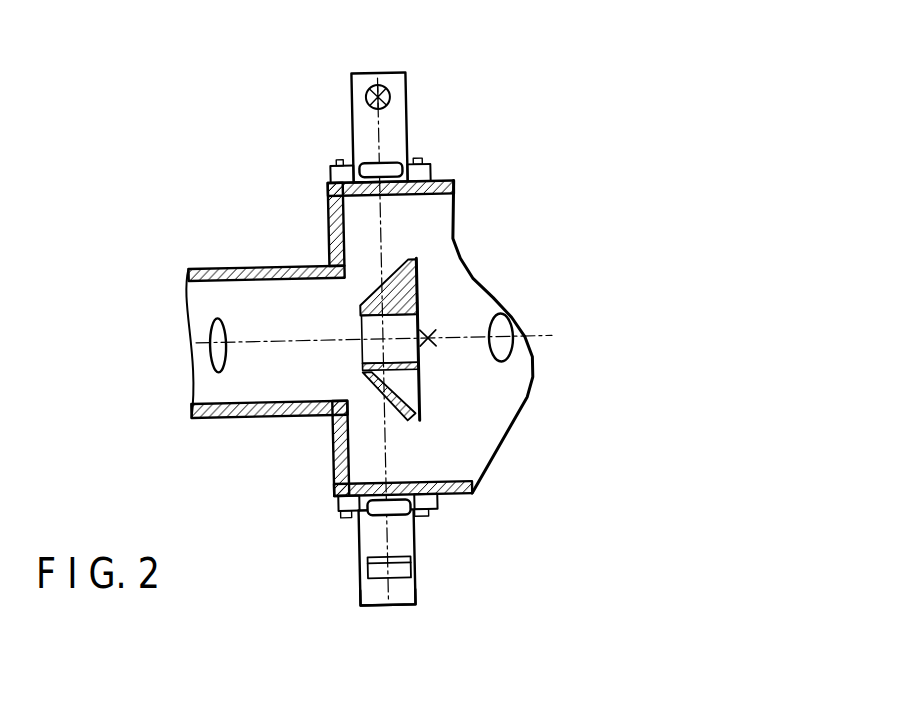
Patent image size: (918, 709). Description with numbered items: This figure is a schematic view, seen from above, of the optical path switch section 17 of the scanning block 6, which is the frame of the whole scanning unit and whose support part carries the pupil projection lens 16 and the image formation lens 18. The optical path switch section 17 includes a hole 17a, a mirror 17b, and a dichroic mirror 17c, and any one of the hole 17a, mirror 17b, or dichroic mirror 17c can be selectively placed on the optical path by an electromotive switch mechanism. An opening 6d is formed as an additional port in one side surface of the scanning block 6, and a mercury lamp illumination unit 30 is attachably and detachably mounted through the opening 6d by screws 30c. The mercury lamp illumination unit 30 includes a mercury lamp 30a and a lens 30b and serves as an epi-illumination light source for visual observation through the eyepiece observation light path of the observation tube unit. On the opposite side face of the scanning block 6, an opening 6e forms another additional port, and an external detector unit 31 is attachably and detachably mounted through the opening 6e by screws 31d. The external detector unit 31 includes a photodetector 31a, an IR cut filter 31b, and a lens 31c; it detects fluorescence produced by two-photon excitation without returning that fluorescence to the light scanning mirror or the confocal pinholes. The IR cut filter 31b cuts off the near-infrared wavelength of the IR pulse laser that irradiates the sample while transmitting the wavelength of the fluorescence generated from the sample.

The scanning block 6 is at (302, 409).
The opening 6d is at (400, 199).
The opening 6e is at (400, 484).
The pupil projection lens 16 is at (497, 350).
The optical path switch section 17 is at (421, 298).
The hole 17a is at (410, 328).
The mirror 17b is at (399, 258).
The dichroic mirror 17c is at (406, 421).
The image formation lens 18 is at (212, 353).
The mercury lamp illumination unit 30 is at (414, 110).
The mercury lamp 30a is at (388, 92).
The lens 30b is at (394, 163).
The screws 30c is at (338, 166).
The external detector unit 31 is at (355, 567).
The photodetector 31a is at (412, 582).
The IR cut filter 31b is at (412, 561).
The lens 31c is at (393, 510).
The screws 31d is at (356, 510).